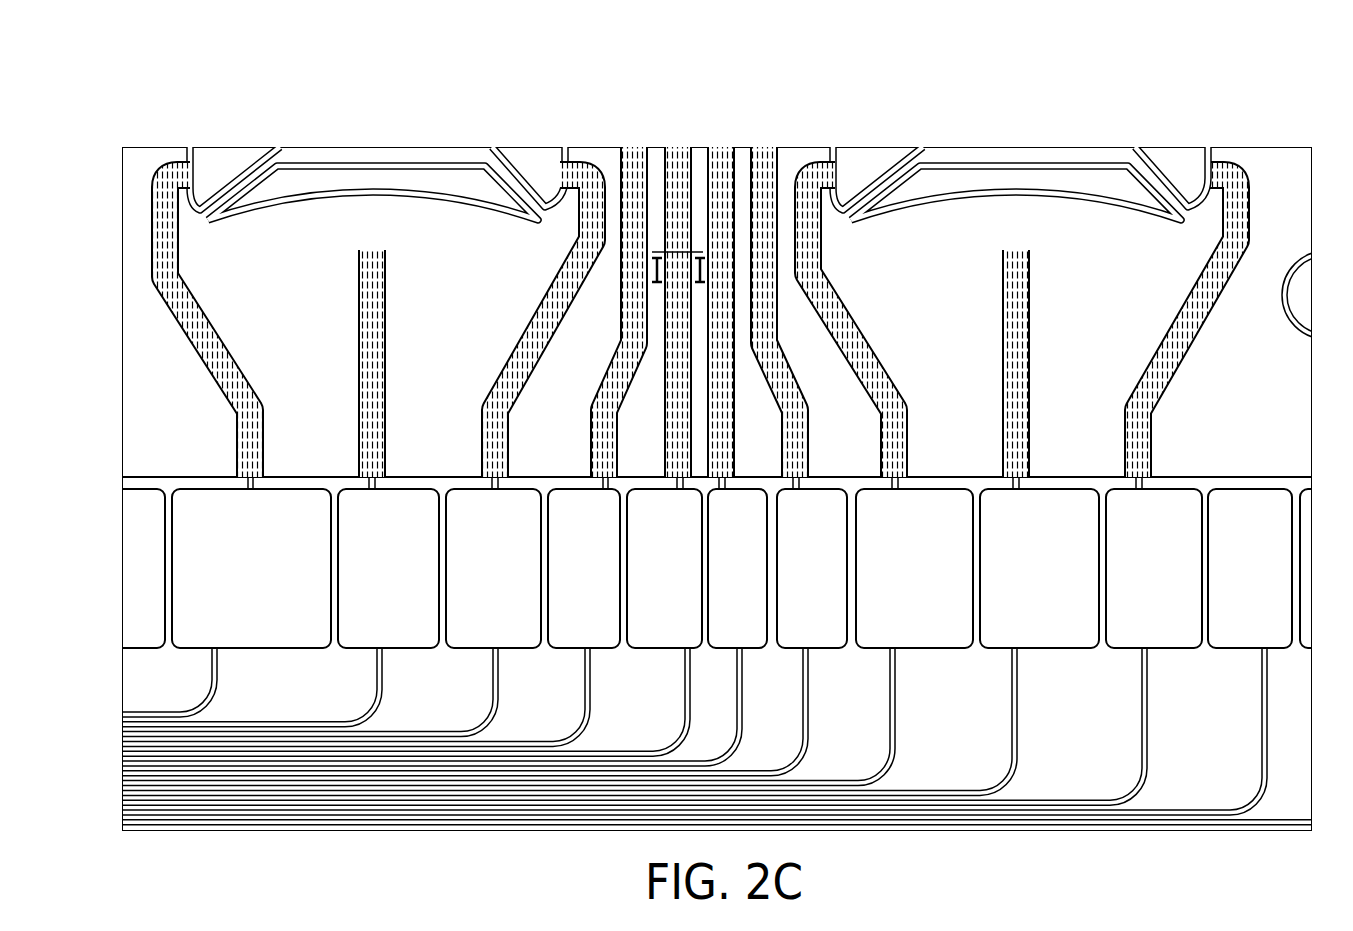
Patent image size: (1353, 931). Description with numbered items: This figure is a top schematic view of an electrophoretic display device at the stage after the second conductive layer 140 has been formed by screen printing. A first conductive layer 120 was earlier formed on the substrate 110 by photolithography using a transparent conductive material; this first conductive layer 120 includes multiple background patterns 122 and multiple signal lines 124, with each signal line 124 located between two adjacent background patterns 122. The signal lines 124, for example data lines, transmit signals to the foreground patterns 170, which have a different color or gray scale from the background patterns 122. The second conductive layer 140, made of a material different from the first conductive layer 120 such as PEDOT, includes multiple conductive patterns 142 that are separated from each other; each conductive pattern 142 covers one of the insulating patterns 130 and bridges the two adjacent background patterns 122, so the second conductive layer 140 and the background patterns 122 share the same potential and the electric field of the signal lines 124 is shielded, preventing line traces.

The substrate 110 is at (147, 686).
The first conductive layer 120 is at (660, 249).
The background patterns 122 is at (660, 270).
The signal lines 124 is at (634, 153).
The insulating patterns 130 is at (745, 153).
The second conductive layer 140 is at (836, 249).
The conductive patterns 142 is at (877, 65).
The foreground patterns 170 is at (963, 210).